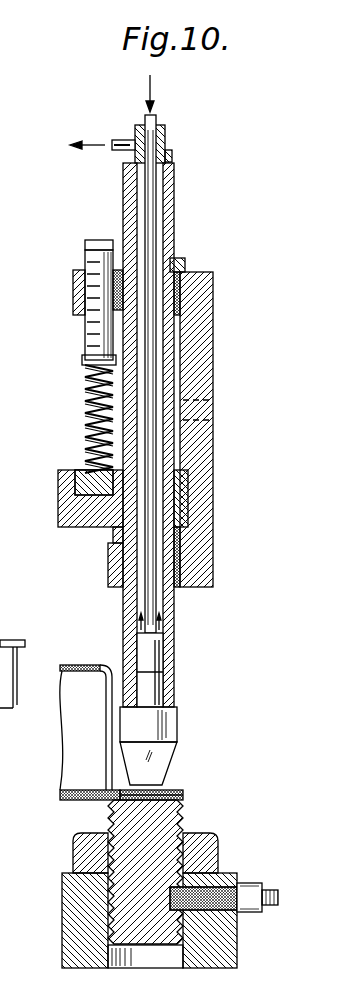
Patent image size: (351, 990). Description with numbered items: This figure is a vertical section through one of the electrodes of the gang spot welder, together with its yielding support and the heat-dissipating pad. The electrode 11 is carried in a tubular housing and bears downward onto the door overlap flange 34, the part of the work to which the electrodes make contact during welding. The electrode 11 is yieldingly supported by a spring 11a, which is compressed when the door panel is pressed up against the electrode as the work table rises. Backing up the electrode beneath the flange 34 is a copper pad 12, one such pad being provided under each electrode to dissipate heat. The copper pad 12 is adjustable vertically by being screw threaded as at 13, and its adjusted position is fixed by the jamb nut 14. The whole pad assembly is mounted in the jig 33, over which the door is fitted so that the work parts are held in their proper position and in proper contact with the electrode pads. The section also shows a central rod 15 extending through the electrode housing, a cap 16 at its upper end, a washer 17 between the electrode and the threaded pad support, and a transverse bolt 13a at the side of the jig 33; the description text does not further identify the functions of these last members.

The electrode 11 is at (178, 720).
The spring 11a is at (87, 393).
The copper pad 12 is at (61, 300).
The screw thread 13 is at (110, 822).
The clamping bolt 13a is at (268, 882).
The jamb nut 14 is at (212, 833).
The needle rod 15 is at (151, 201).
The packing nut 16 is at (137, 187).
The gasket washer 17 is at (186, 794).
The jig 33 is at (72, 887).
The door overlap flange 34 is at (175, 792).